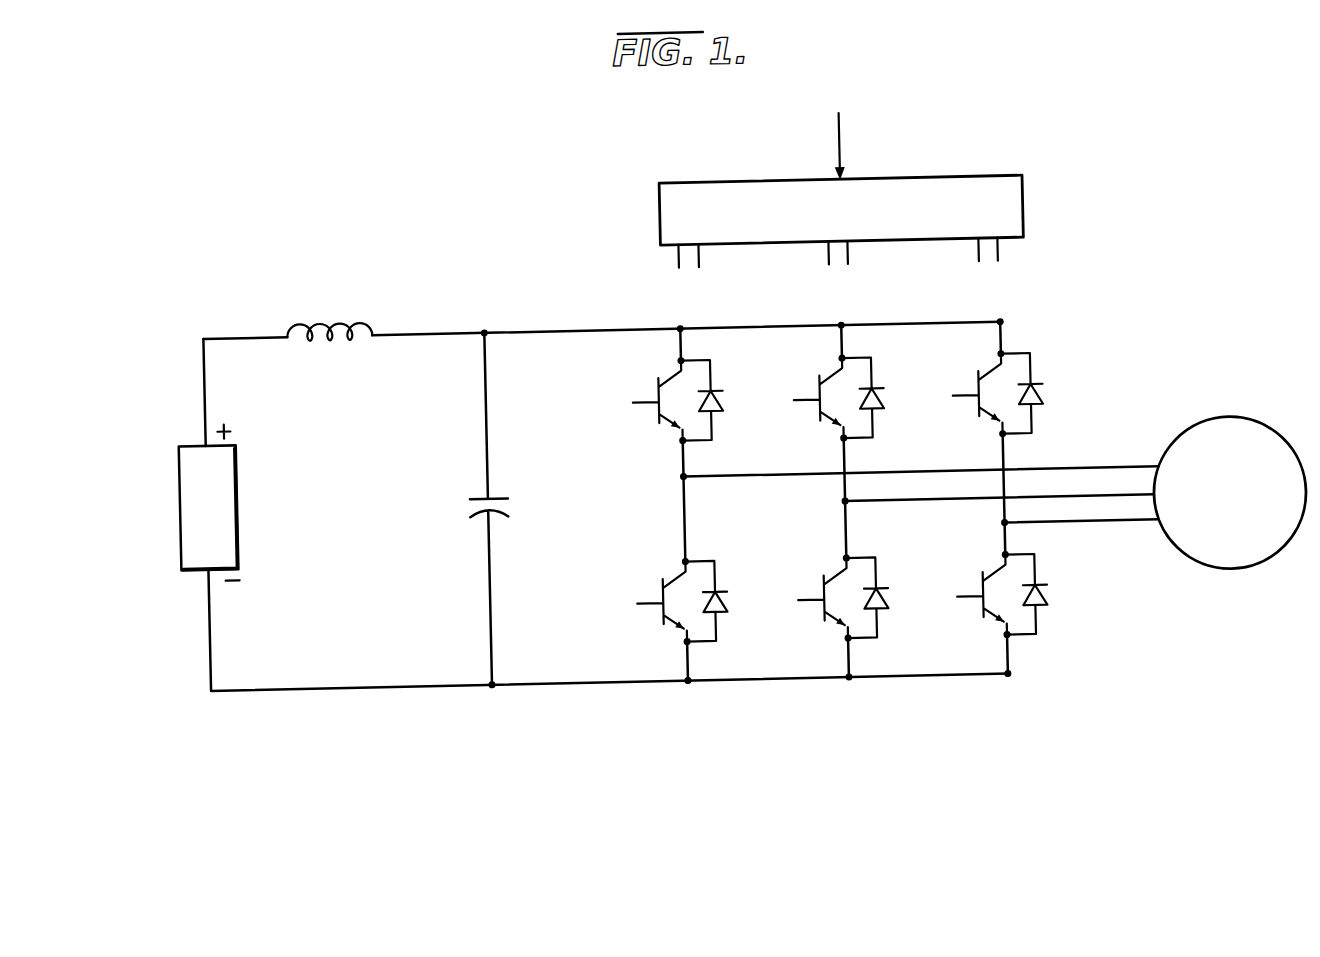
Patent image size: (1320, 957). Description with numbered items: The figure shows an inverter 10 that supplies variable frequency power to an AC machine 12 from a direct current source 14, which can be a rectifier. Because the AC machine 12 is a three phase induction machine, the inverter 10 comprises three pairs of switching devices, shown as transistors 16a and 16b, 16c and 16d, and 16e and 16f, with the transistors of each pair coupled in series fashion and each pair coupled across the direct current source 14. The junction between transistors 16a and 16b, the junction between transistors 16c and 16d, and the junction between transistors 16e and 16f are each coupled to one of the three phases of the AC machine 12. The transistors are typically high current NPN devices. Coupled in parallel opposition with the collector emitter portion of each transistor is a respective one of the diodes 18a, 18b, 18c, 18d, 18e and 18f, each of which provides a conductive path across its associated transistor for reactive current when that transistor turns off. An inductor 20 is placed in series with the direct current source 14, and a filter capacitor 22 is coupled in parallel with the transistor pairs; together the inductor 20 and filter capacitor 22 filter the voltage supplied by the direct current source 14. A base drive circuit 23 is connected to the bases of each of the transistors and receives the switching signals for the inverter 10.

The inverter 10 is at (565, 744).
The AC machine 12 is at (1221, 431).
The direct current source 14 is at (179, 502).
The transistor 16a is at (659, 394).
The transistor 16b is at (663, 595).
The transistor 16c is at (820, 391).
The transistor 16d is at (824, 591).
The transistor 16e is at (979, 387).
The transistor 16f is at (983, 588).
The diode 18a is at (727, 400).
The diode 18b is at (731, 601).
The diode 18c is at (888, 397).
The diode 18d is at (893, 597).
The diode 18e is at (1047, 393).
The diode 18f is at (1051, 594).
The inductor 20 is at (335, 317).
The filter capacitor 22 is at (512, 500).
The base drive circuit 23 is at (665, 212).